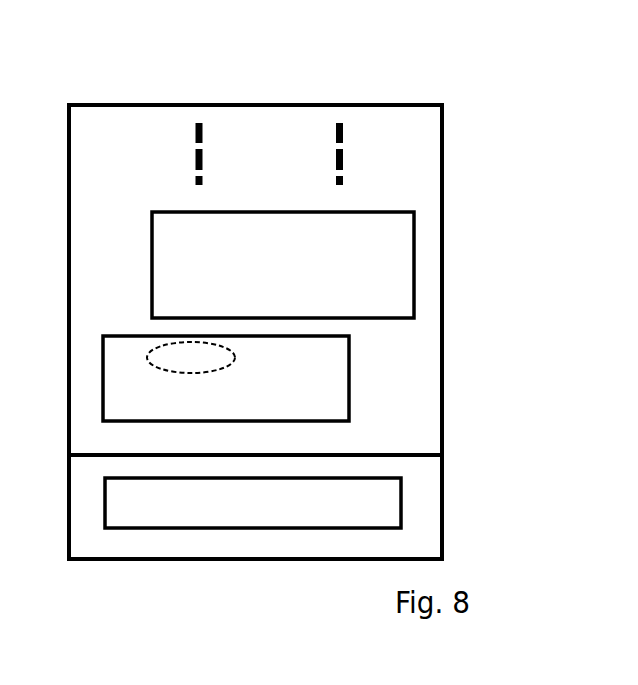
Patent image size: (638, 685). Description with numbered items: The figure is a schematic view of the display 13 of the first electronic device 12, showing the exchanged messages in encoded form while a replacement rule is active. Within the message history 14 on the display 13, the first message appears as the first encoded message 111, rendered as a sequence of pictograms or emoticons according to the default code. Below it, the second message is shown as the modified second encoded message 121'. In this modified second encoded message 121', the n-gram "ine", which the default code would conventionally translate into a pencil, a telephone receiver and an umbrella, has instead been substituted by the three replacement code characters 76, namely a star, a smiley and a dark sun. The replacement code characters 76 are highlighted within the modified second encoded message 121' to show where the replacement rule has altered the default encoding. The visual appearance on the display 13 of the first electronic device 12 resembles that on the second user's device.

The first electronic device 12 is at (320, 78).
The display 13 is at (413, 170).
The message history 14 is at (240, 128).
The first encoded message 111 is at (386, 279).
The modified second encoded message 121' is at (303, 378).
The replacement code character 76 is at (222, 362).